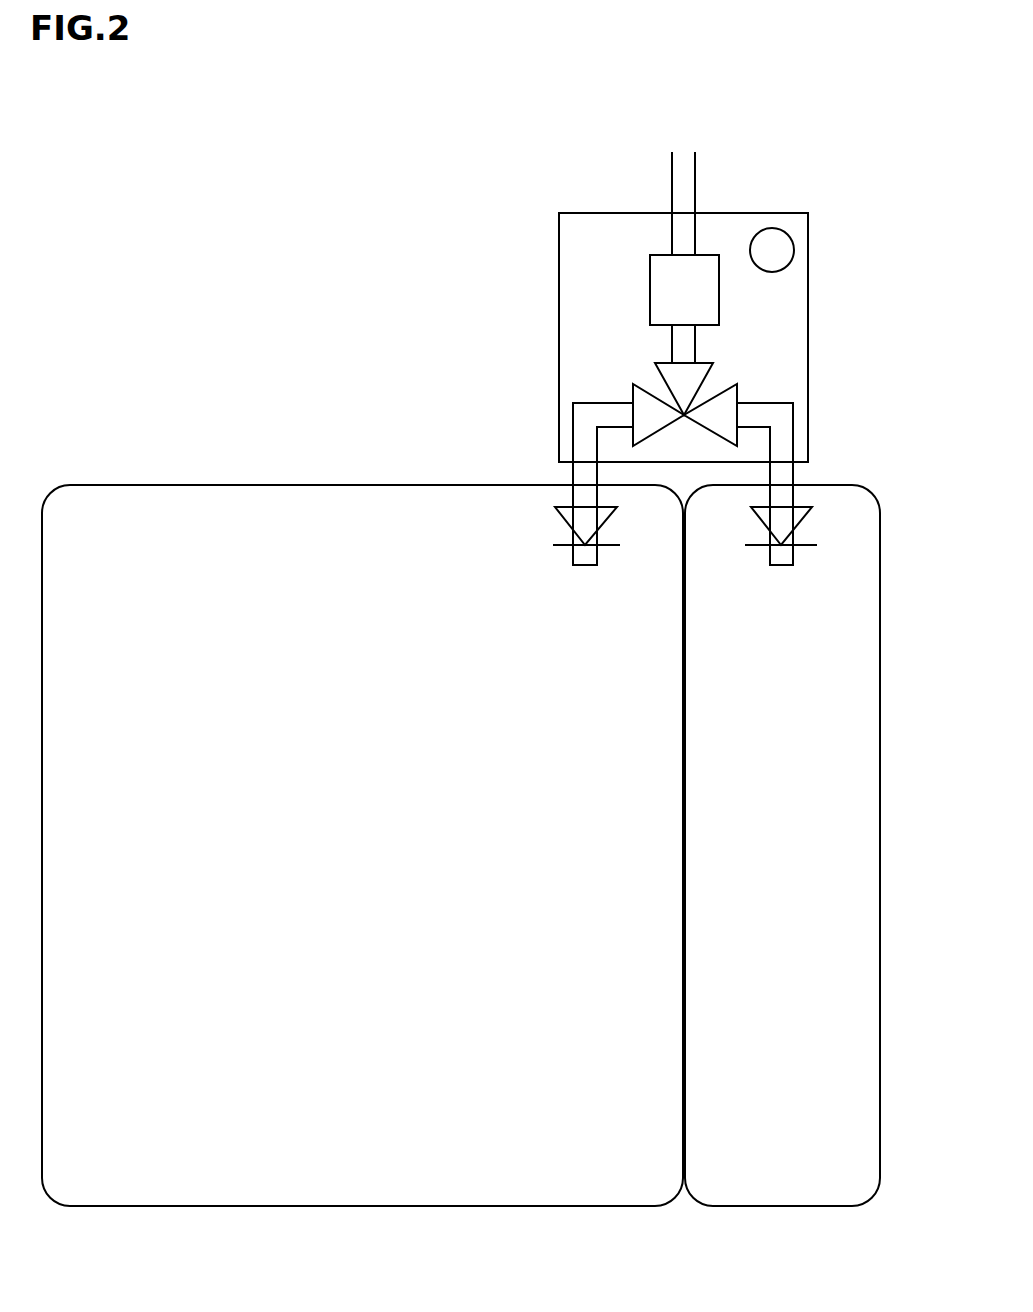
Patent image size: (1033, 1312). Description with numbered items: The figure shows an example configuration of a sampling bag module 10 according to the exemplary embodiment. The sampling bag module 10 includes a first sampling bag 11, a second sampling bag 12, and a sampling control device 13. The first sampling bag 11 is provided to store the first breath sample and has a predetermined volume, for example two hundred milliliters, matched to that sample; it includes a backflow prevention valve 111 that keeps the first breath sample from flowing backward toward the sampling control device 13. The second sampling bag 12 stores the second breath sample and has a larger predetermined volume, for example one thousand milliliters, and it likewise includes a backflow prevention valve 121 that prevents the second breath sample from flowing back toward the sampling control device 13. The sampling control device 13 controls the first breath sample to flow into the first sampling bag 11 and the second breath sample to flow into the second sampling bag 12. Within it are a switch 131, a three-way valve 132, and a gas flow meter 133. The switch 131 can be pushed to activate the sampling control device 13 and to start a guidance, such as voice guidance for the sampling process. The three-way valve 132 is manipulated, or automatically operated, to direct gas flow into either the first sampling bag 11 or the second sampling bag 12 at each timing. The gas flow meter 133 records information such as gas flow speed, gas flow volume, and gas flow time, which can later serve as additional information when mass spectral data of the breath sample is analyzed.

The sampling bag module 10 is at (326, 172).
The first sampling bag 11 is at (842, 485).
The backflow prevention valve 111 is at (805, 530).
The second sampling bag 12 is at (250, 485).
The backflow prevention valve 121 is at (568, 513).
The sampling control device 13 is at (782, 213).
The switch 131 is at (795, 250).
The three-way valve 132 is at (716, 375).
The gas flow meter 133 is at (720, 288).